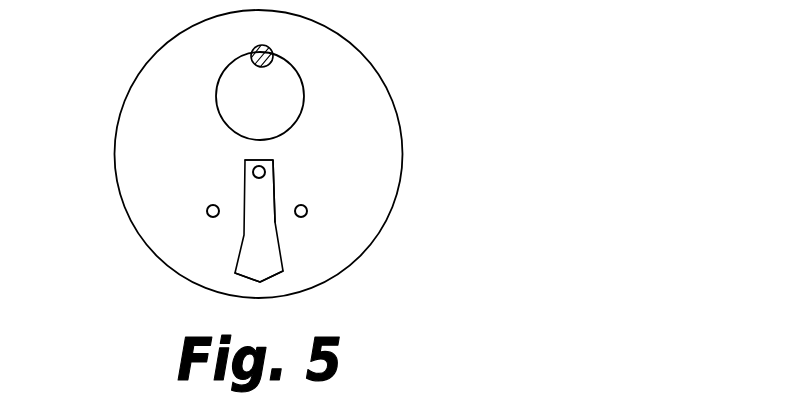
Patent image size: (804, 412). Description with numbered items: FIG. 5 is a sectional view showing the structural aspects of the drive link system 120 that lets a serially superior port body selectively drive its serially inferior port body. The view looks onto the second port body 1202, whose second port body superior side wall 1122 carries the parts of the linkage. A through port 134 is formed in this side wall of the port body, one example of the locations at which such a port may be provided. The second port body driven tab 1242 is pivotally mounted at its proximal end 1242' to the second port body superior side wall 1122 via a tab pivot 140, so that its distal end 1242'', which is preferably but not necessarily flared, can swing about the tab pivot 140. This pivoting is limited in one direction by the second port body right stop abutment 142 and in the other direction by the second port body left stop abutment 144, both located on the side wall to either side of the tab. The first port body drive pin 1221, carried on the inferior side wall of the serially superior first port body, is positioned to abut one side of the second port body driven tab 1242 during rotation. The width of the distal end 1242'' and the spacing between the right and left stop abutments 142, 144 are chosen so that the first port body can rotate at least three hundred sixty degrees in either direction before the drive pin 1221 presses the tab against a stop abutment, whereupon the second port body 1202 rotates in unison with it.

The drive link system 120 is at (250, 62).
The through port 134 is at (275, 114).
The tab pivot 140 is at (267, 181).
The second port body right stop abutment 142 is at (308, 211).
The second port body left stop abutment 144 is at (206, 207).
The second port body superior side wall 1122 is at (160, 220).
The second port body 1202 is at (399, 105).
The first port body drive pin 1221 is at (272, 45).
The second port body driven tab 1242 is at (352, 221).
The proximal end 1242' is at (361, 160).
The distal end 1242'' is at (359, 261).